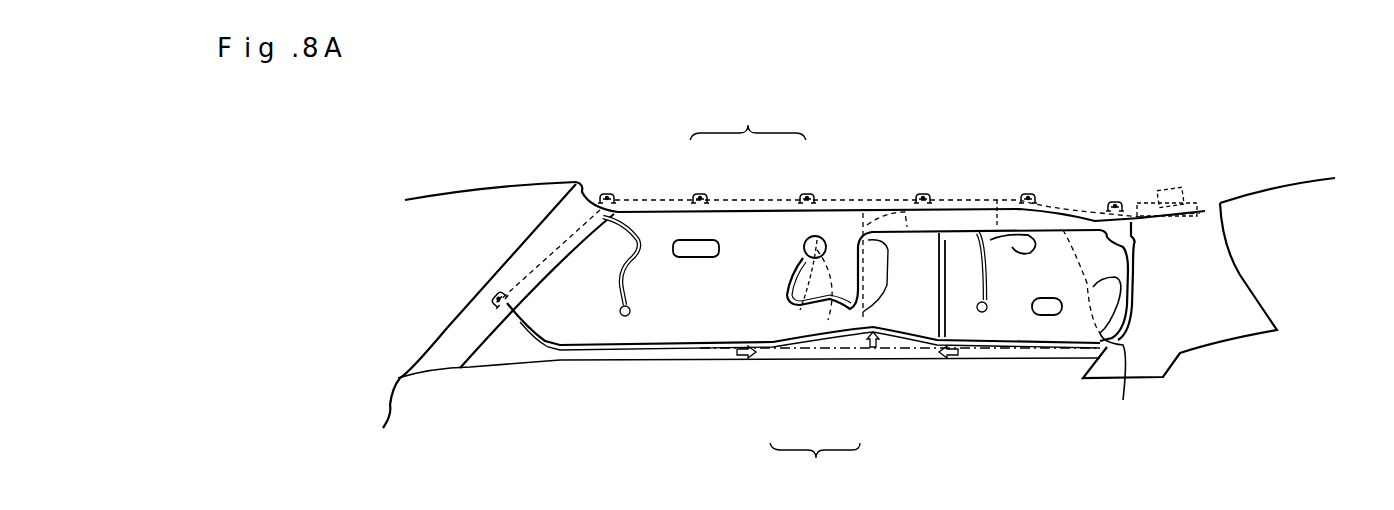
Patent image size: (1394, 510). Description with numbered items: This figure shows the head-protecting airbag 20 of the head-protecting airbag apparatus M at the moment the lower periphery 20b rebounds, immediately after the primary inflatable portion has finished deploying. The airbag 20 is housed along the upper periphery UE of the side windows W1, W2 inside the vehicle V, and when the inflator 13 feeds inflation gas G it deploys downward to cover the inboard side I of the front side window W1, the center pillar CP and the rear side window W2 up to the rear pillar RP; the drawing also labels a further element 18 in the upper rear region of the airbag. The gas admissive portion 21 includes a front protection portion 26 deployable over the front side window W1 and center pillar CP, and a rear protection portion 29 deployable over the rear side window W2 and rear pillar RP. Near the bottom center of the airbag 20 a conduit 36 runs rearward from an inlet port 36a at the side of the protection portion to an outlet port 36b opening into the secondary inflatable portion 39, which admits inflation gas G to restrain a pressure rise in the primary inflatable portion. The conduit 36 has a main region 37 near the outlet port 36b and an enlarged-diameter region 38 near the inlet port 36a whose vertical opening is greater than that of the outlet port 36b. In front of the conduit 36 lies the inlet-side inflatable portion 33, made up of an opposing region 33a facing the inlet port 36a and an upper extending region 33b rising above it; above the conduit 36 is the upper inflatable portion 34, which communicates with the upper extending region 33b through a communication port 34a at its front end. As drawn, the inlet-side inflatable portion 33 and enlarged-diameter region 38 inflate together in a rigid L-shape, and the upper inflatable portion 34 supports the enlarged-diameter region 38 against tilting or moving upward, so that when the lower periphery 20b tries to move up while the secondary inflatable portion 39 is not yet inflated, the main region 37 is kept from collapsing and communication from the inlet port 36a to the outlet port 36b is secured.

The inflator 13 is at (1197, 200).
The pillar trim 18 is at (997, 226).
The head-protecting airbag 20 is at (532, 352).
The lower periphery 20b is at (912, 337).
The gas admissive portion 21 is at (556, 280).
The front protection portion 26 is at (657, 322).
The rear protection portion 29 is at (1113, 298).
The inlet-side inflatable portion 33 is at (748, 116).
The opposing region 33a is at (767, 320).
The upper extending region 33b is at (778, 260).
The upper inflatable portion 34 is at (843, 263).
The communication port 34a is at (818, 238).
The conduit 36 is at (935, 352).
The inlet port 36a is at (810, 315).
The outlet port 36b is at (893, 260).
The main region 37 is at (847, 318).
The enlarged-diameter region 38 is at (818, 318).
The secondary inflatable portion 39 is at (928, 258).
The center pillar CP is at (847, 350).
The inflation gas G is at (627, 328).
The inboard side I is at (600, 378).
The head-protecting airbag apparatus M is at (1185, 160).
The rear pillar RP is at (1207, 242).
The upper periphery UE is at (650, 190).
The vehicle V is at (457, 140).
The front side window W1 is at (507, 348).
The rear side window W2 is at (1090, 240).